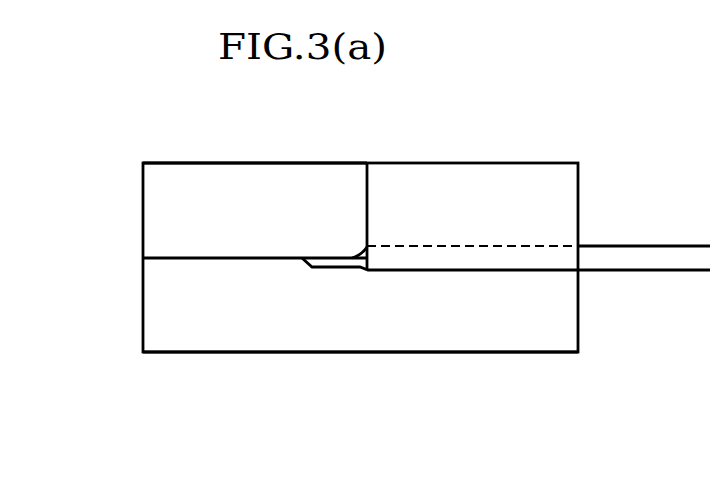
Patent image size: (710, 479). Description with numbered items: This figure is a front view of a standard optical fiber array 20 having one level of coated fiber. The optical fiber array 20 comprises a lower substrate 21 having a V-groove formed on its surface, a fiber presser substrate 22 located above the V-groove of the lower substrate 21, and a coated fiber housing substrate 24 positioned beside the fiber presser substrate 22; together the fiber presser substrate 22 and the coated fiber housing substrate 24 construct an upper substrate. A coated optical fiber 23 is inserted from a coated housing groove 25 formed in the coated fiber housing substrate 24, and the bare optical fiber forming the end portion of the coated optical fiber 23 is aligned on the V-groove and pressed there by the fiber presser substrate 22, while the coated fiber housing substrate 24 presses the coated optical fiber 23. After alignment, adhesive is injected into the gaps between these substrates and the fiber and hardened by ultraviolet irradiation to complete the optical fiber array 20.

The optical fiber array 20 is at (592, 154).
The lower substrate 21 is at (163, 322).
The fiber presser substrate 22 is at (168, 208).
The coated optical fiber 23 is at (563, 252).
The coated fiber housing substrate 24 is at (481, 187).
The coated housing groove 25 is at (532, 257).